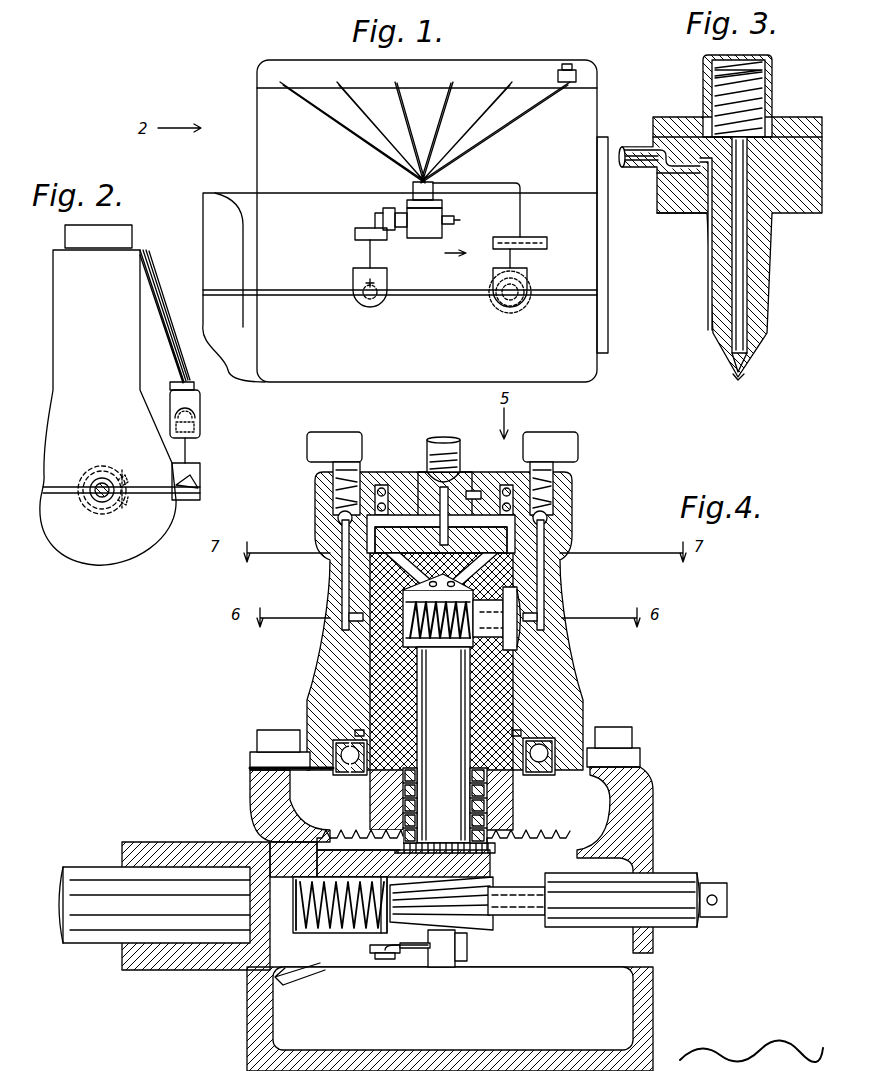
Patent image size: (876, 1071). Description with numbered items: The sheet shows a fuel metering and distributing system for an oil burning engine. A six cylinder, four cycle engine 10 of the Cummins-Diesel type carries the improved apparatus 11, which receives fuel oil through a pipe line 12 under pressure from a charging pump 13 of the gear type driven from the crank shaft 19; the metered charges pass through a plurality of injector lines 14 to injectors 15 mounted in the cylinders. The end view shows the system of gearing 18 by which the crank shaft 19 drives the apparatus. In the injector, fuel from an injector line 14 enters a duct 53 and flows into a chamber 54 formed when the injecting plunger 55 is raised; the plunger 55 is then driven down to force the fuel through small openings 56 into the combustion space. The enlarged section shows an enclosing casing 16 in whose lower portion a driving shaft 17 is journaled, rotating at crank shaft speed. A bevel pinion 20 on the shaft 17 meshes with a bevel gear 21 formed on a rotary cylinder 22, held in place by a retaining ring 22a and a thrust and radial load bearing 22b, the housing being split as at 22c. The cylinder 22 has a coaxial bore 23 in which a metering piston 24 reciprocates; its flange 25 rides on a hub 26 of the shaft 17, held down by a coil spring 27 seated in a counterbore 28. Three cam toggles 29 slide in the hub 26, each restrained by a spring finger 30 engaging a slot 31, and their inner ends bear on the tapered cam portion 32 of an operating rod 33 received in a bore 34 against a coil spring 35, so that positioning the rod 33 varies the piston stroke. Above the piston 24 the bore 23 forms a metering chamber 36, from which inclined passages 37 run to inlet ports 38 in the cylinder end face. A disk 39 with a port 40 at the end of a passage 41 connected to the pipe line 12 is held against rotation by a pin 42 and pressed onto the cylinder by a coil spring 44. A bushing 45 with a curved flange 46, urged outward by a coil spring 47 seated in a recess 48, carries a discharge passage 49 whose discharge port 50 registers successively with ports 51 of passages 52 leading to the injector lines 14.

In FIG. 1, the engine 10 is at (260, 100).
In FIG. 1, the apparatus 11 is at (428, 238).
In FIG. 2, the apparatus 11 is at (212, 421).
In FIG. 4, the apparatus 11 is at (592, 689).
In FIG. 1, the pipe line 12 is at (522, 210).
In FIG. 4, the pipe line 12 is at (444, 430).
In FIG. 1, the charging pump 13 is at (547, 249).
In FIG. 4, the charging pump 13 is at (460, 470).
In FIG. 1, the injector lines 14 is at (345, 125).
In FIG. 2, the injector lines 14 is at (192, 368).
In FIG. 4, the injector lines 14 is at (325, 462).
In FIG. 1, the injectors 15 is at (568, 64).
In FIG. 3, the injectors 15 is at (772, 80).
In FIG. 4, the enclosing casing 16 is at (606, 735).
In FIG. 1, the driving shaft 17 is at (390, 210).
In FIG. 4, the driving shaft 17 is at (90, 868).
In FIG. 1, the system of gearing 18 is at (355, 256).
In FIG. 2, the system of gearing 18 is at (198, 455).
In FIG. 2, the crank shaft 19 is at (112, 508).
In FIG. 4, the bevel pinion 20 is at (280, 1004).
In FIG. 4, the bevel gear 21 is at (285, 805).
In FIG. 4, the rotary cylinder 22 is at (370, 697).
In FIG. 4, the retaining ring 22a is at (367, 748).
In FIG. 4, the thrust and radial load bearing 22b is at (555, 760).
In FIG. 4, the split 22c is at (262, 765).
In FIG. 4, the bore 23 is at (370, 673).
In FIG. 4, the metering piston 24 is at (440, 740).
In FIG. 4, the flange 25 is at (485, 850).
In FIG. 4, the hub 26 is at (352, 936).
In FIG. 4, the coil spring 27 is at (500, 845).
In FIG. 4, the counterbore 28 is at (515, 838).
In FIG. 4, the cam toggles 29 is at (432, 968).
In FIG. 4, the spring finger 30 is at (392, 960).
In FIG. 4, the slot 31 is at (460, 965).
In FIG. 4, the tapered cam portion 32 is at (470, 955).
In FIG. 4, the operating rod 33 is at (570, 930).
In FIG. 4, the bore 34 is at (345, 960).
In FIG. 4, the coil spring 35 is at (318, 962).
In FIG. 4, the metering chamber 36 is at (403, 593).
In FIG. 4, the passages 37 is at (513, 572).
In FIG. 4, the inlet ports 38 is at (515, 520).
In FIG. 4, the disk 39 is at (507, 540).
In FIG. 4, the port 40 is at (372, 578).
In FIG. 4, the passage 41 is at (420, 485).
In FIG. 4, the pin 42 is at (478, 490).
In FIG. 4, the coil spring 44 is at (340, 540).
In FIG. 4, the bushing 45 is at (517, 635).
In FIG. 4, the flange 46 is at (546, 592).
In FIG. 4, the coil spring 47 is at (370, 640).
In FIG. 4, the recess 48 is at (403, 650).
In FIG. 4, the discharge passage 49 is at (504, 610).
In FIG. 4, the discharge port 50 is at (500, 650).
In FIG. 4, the ports 51 is at (362, 618).
In FIG. 4, the passages 52 is at (372, 565).
In FIG. 3, the duct 53 is at (710, 282).
In FIG. 3, the chamber 54 is at (752, 372).
In FIG. 3, the injecting plunger 55 is at (747, 267).
In FIG. 3, the small openings 56 is at (738, 384).